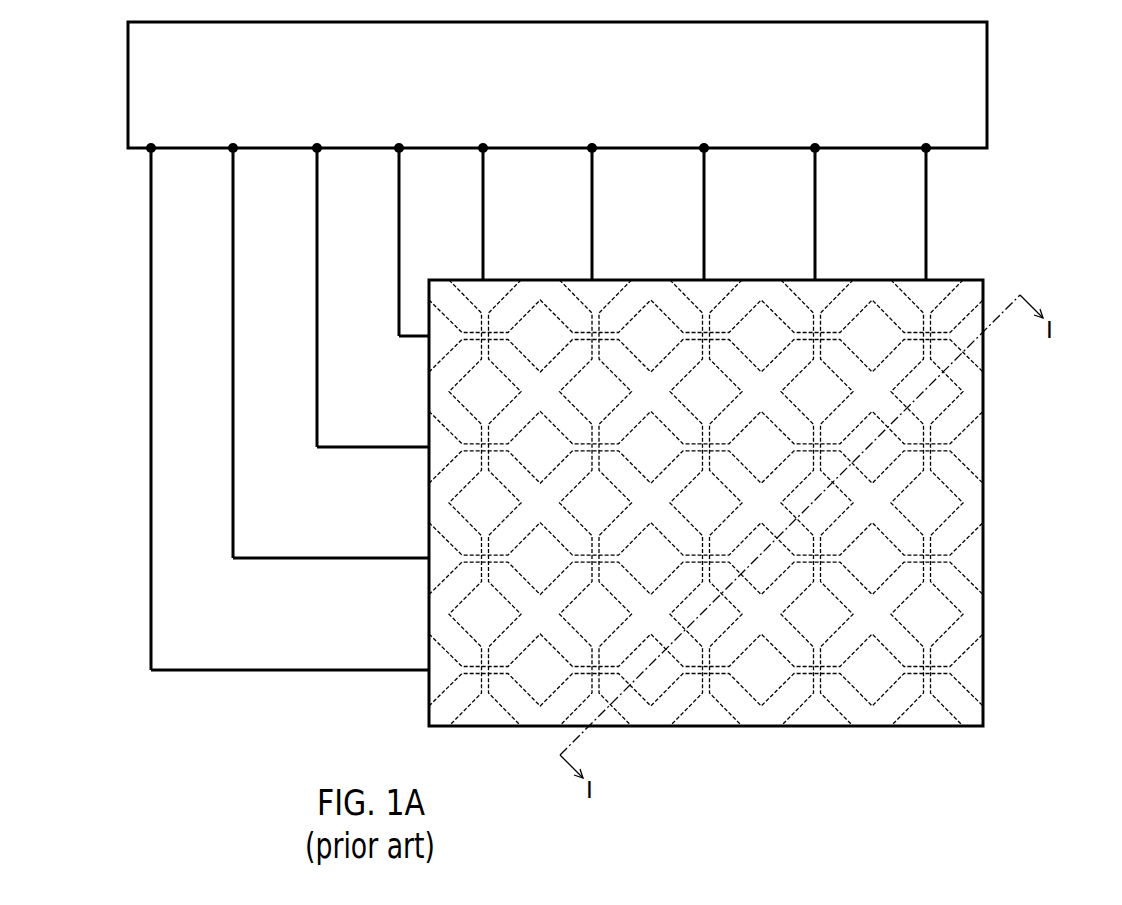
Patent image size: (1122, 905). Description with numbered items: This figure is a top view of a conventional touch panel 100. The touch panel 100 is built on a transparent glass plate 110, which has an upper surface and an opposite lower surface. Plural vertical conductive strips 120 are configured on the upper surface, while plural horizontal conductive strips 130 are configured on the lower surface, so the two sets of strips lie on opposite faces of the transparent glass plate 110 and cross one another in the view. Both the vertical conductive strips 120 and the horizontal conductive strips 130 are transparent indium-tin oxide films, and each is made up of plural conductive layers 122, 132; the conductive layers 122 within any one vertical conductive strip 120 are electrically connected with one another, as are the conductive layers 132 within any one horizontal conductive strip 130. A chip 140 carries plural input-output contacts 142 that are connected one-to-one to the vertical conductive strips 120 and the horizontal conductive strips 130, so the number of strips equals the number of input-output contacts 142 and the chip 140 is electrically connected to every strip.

The touch panel 100 is at (1045, 782).
The transparent glass plate 110 is at (968, 292).
The vertical conductive strips 120 is at (488, 740).
The conductive layers 122 is at (460, 384).
The horizontal conductive strips 130 is at (1003, 348).
The conductive layers 132 is at (646, 307).
The chip 140 is at (574, 101).
The input-output contacts 142 is at (148, 156).